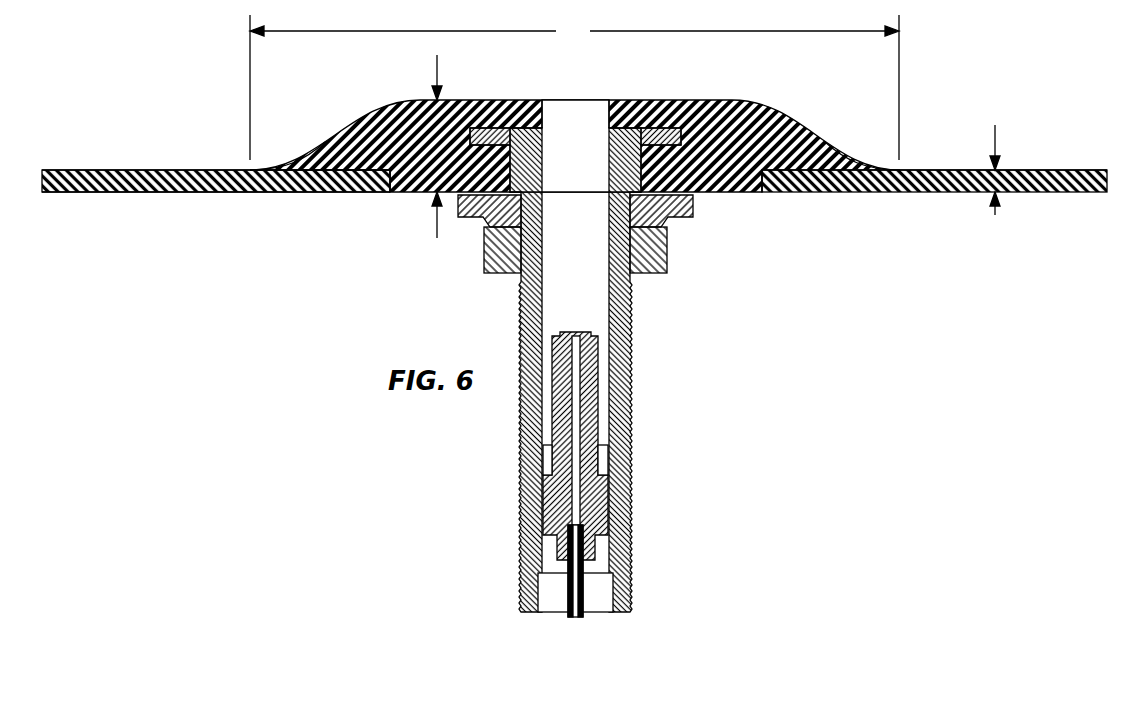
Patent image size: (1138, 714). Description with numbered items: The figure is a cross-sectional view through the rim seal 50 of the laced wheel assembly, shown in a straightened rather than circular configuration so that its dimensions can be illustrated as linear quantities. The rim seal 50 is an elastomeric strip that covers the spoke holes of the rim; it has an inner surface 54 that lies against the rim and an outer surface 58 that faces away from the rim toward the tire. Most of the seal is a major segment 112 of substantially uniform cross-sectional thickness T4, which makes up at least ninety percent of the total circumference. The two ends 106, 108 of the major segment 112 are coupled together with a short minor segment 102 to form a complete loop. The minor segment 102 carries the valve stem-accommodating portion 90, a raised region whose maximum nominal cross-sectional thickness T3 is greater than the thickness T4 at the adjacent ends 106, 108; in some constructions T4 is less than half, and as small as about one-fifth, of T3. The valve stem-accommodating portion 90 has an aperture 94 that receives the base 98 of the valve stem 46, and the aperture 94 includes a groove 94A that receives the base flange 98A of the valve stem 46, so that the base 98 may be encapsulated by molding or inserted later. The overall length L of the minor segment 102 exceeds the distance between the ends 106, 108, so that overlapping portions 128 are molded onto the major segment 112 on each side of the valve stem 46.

The valve stem 46 is at (652, 389).
The rim seal 50 is at (1033, 125).
The inner surface 54 is at (145, 198).
The outer surface 58 is at (164, 165).
The valve stem-accommodating portion 90 is at (688, 138).
The aperture 94 is at (542, 118).
The groove 94A is at (445, 138).
The base 98 is at (527, 163).
The base flange 98A is at (498, 130).
The minor segment 102 is at (745, 195).
The end of major segment 106 is at (345, 180).
The end of major segment 108 is at (780, 193).
The major segment 112 is at (118, 176).
The overlapping portions 128 is at (305, 162).
The overall length of minor segment L is at (574, 87).
The maximum nominal cross-sectional thickness T3 is at (438, 159).
The cross-sectional thickness T4 is at (996, 194).